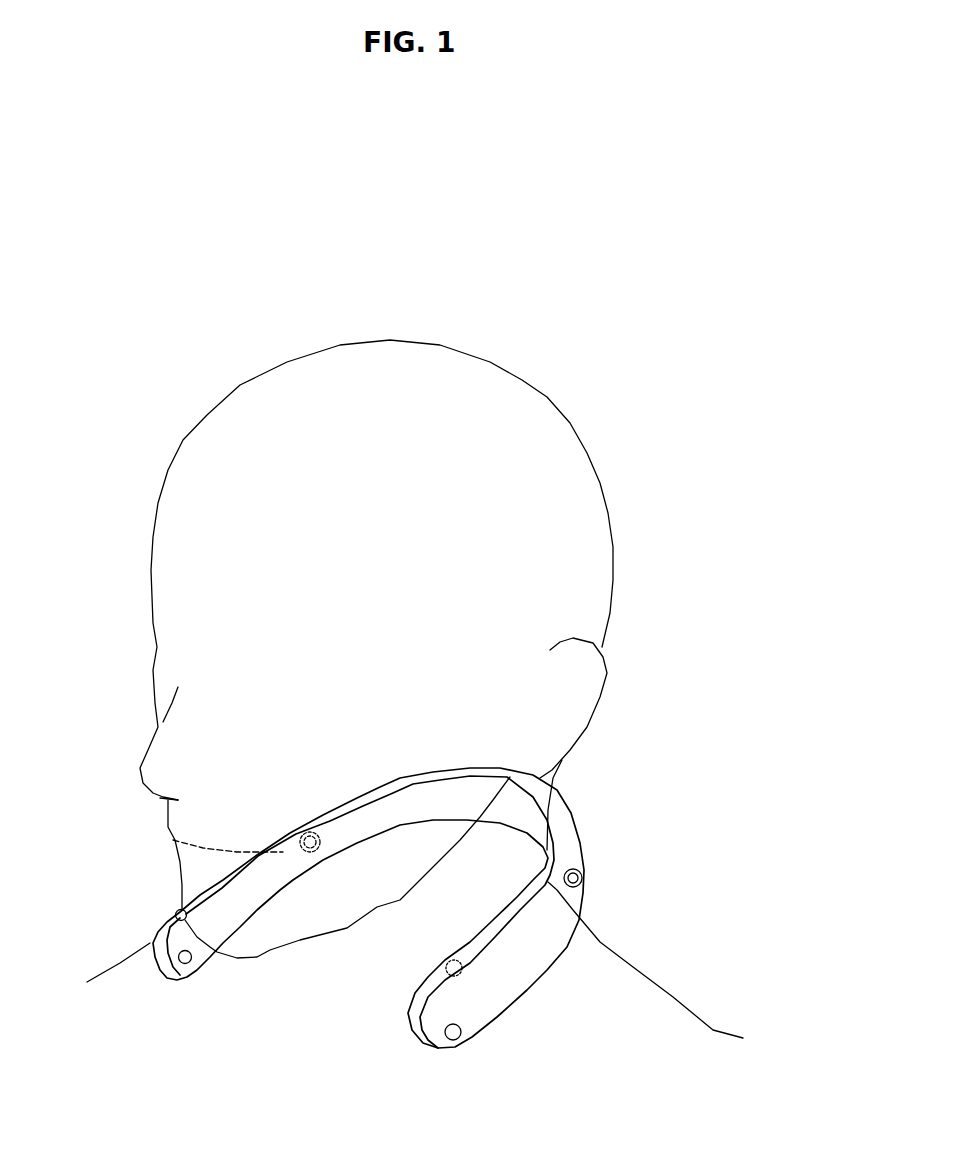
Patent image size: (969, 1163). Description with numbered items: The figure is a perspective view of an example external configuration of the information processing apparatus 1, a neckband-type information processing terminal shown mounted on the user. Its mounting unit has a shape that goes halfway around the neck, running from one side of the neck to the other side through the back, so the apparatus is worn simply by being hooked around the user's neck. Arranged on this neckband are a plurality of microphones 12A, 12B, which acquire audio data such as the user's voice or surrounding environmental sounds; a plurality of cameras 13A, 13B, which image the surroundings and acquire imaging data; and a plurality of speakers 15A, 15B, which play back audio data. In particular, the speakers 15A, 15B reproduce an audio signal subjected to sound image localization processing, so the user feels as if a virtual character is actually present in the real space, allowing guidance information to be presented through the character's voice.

The information processing apparatus 1 is at (596, 812).
The microphone 12A is at (178, 911).
The microphone 12B is at (447, 961).
The camera 13A is at (153, 942).
The camera 13B is at (455, 1040).
The speaker 15A is at (302, 836).
The speaker 15B is at (582, 876).